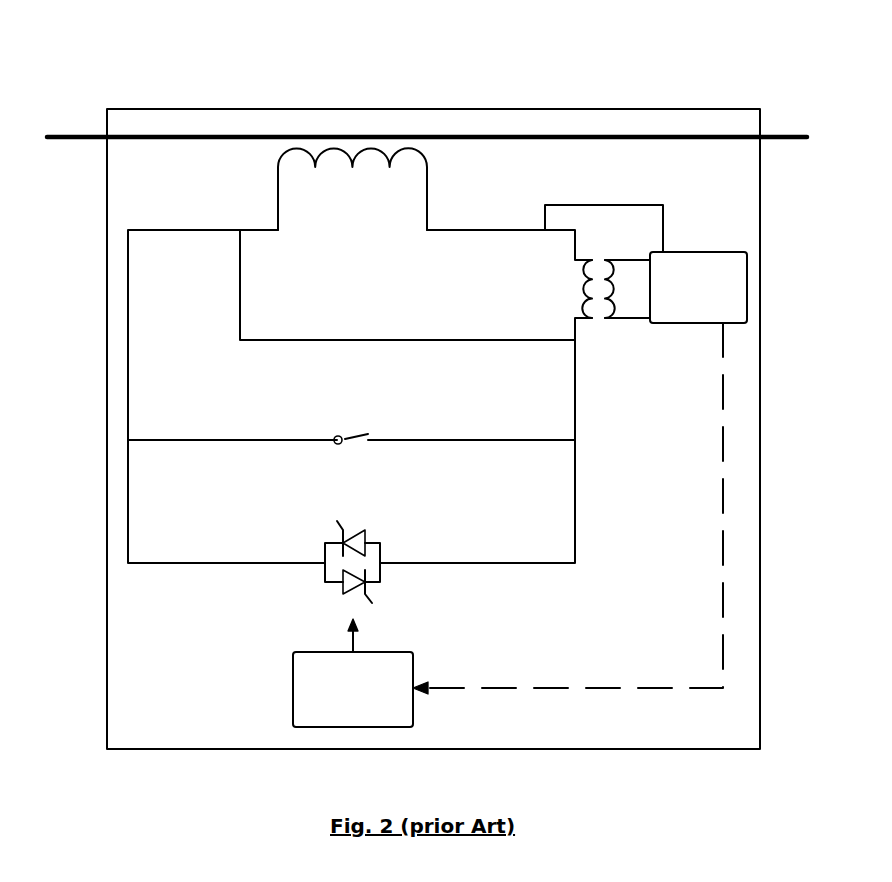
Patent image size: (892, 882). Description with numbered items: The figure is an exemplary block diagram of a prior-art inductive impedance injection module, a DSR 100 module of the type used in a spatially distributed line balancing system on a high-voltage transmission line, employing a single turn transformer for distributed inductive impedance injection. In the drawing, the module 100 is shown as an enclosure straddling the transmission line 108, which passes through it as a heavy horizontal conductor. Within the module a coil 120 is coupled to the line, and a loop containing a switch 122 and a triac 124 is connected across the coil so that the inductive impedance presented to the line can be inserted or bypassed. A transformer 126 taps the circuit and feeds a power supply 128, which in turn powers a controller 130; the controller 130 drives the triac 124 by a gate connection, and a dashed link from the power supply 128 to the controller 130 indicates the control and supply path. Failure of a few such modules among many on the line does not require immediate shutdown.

The DSR module 100 is at (607, 108).
The power line 108 is at (63, 133).
The inductor coil 120 is at (352, 153).
The switch 122 is at (355, 437).
The triac 124 is at (345, 512).
The transformer 126 is at (598, 270).
The power supply 128 is at (703, 327).
The controller 130 is at (293, 697).